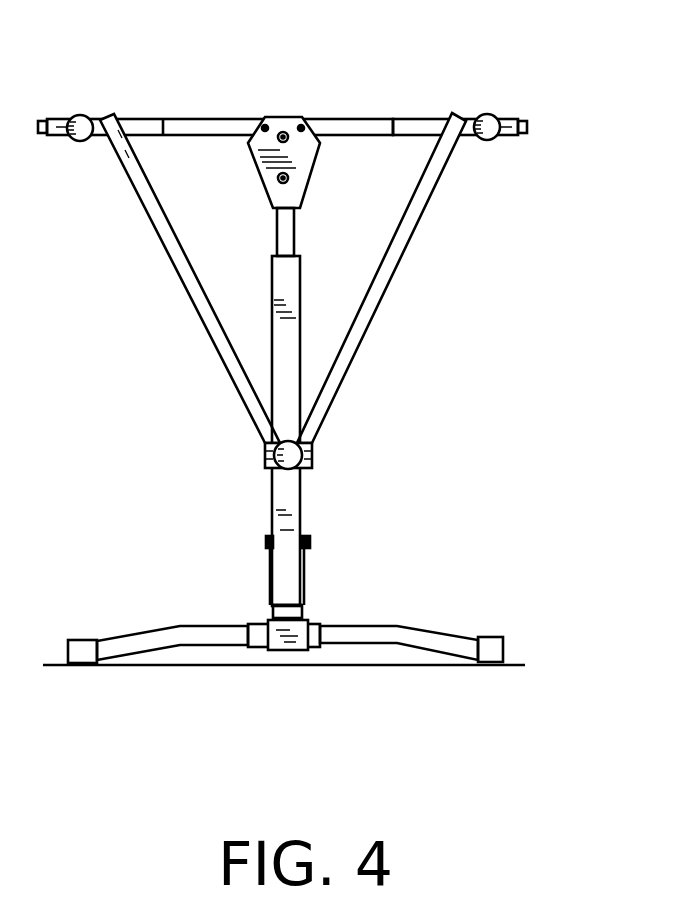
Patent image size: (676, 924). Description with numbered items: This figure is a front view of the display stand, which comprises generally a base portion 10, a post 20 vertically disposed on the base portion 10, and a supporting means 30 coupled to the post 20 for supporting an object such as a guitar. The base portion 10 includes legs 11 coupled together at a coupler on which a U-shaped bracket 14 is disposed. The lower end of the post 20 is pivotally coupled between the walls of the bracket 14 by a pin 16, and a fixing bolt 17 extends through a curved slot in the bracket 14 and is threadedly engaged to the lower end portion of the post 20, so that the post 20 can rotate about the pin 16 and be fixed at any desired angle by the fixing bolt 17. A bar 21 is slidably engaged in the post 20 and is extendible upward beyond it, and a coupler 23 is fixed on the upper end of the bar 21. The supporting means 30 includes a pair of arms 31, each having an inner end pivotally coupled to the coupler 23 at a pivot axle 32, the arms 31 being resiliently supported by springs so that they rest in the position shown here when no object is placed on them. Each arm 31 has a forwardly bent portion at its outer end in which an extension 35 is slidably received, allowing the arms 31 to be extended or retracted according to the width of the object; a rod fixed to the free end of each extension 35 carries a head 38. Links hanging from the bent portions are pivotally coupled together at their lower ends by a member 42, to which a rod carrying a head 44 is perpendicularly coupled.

The base portion 10 is at (322, 655).
The legs 11 is at (443, 630).
The U-shaped bracket 14 is at (306, 580).
The pin 16 is at (270, 578).
The fixing bolt 17 is at (310, 545).
The post 20 is at (294, 300).
The bar 21 is at (278, 232).
The coupler 23 is at (302, 195).
The supporting means 30 is at (291, 105).
The arms 31 is at (346, 122).
The pivot axle 32 is at (425, 120).
The extension 35 is at (521, 125).
The head 38 is at (484, 140).
The member 42 is at (313, 460).
The head 44 is at (270, 468).